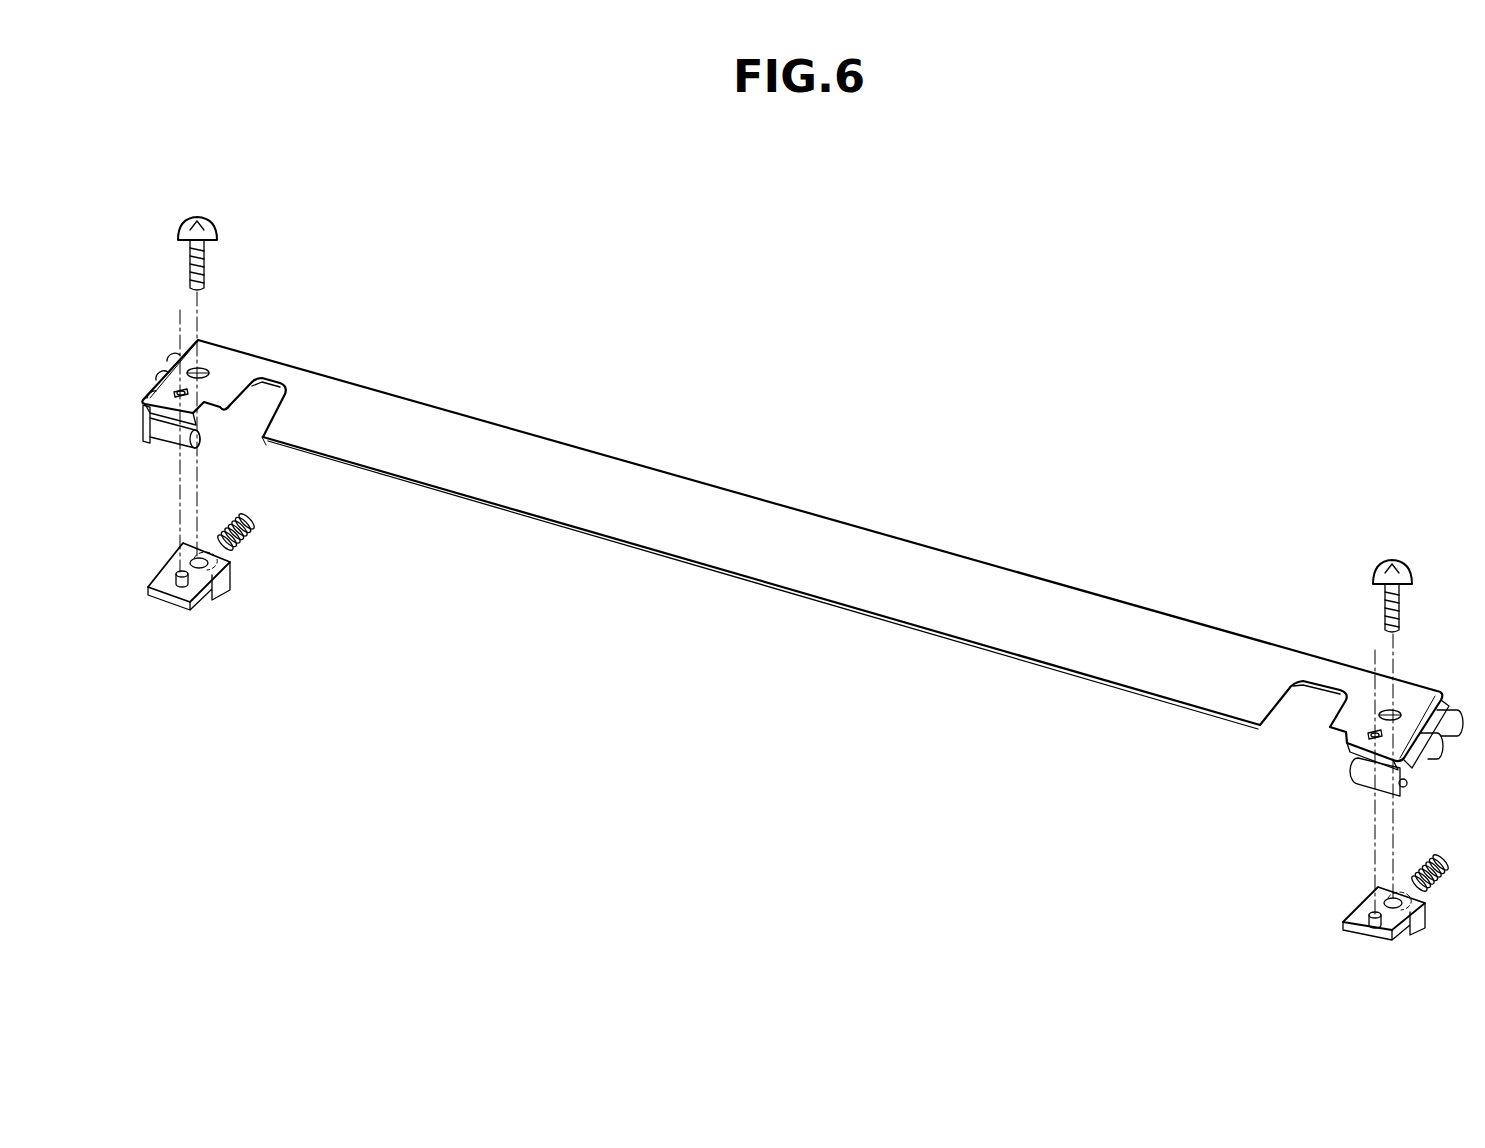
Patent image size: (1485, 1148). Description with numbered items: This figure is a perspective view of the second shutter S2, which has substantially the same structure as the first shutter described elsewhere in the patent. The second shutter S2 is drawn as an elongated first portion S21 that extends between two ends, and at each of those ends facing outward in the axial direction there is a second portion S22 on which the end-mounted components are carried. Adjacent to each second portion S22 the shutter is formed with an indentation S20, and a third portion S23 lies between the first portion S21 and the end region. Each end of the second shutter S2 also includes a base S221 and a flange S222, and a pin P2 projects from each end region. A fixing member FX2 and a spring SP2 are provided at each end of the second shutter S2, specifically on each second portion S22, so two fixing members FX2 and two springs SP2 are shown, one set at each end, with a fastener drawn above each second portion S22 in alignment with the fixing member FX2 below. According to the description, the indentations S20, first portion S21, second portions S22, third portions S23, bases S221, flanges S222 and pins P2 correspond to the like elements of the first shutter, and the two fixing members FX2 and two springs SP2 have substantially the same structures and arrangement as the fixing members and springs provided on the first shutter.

The second shutter S2 is at (781, 551).
The first portion S21 is at (724, 552).
The indentation S20 is at (270, 389).
The third portion S23 is at (282, 370).
The base S221 is at (225, 395).
The flange S222 is at (142, 414).
The second portion S22 is at (208, 355).
The pin P2 is at (172, 438).
The spring SP2 is at (245, 538).
The fixing member FX2 is at (198, 603).